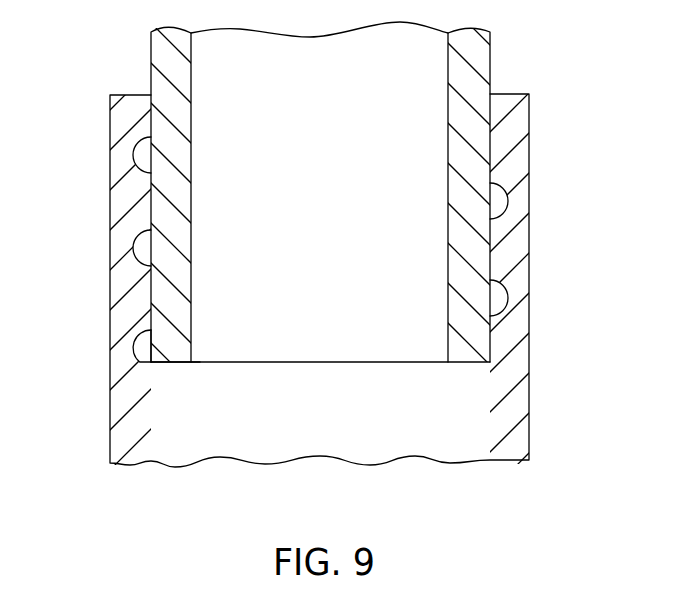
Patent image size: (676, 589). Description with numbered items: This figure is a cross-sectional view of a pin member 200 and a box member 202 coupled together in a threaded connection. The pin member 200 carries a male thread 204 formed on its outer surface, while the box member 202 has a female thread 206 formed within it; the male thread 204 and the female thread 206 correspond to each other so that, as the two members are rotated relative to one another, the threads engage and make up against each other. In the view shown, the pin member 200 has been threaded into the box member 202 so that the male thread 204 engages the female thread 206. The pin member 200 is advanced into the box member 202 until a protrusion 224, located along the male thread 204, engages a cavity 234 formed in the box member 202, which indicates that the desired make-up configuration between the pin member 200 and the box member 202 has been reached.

The pin member 200 is at (470, 366).
The box member 202 is at (338, 294).
The male thread 204 is at (141, 153).
The female thread 206 is at (505, 205).
The protrusion 224 is at (143, 342).
The cavity 234 is at (129, 339).